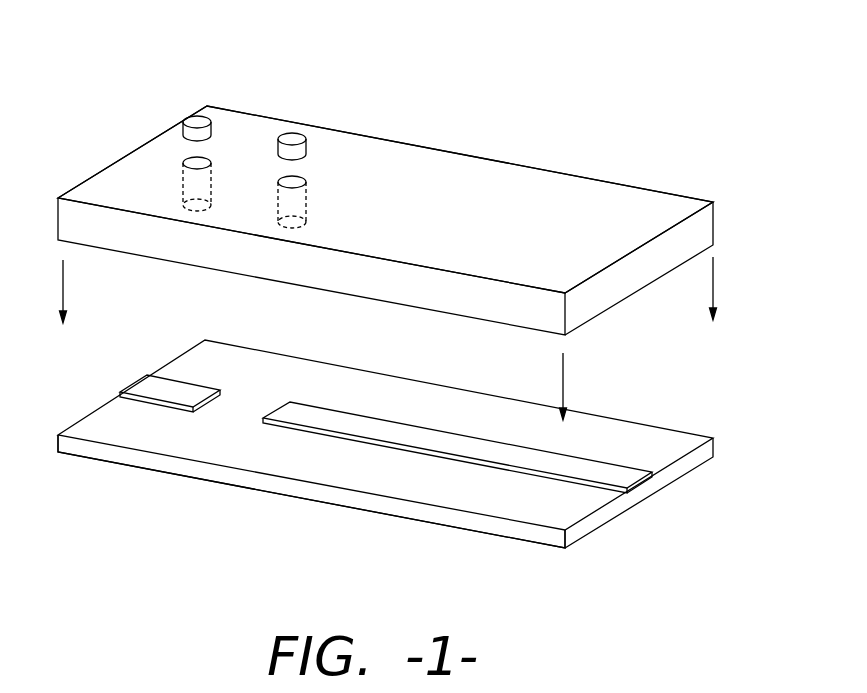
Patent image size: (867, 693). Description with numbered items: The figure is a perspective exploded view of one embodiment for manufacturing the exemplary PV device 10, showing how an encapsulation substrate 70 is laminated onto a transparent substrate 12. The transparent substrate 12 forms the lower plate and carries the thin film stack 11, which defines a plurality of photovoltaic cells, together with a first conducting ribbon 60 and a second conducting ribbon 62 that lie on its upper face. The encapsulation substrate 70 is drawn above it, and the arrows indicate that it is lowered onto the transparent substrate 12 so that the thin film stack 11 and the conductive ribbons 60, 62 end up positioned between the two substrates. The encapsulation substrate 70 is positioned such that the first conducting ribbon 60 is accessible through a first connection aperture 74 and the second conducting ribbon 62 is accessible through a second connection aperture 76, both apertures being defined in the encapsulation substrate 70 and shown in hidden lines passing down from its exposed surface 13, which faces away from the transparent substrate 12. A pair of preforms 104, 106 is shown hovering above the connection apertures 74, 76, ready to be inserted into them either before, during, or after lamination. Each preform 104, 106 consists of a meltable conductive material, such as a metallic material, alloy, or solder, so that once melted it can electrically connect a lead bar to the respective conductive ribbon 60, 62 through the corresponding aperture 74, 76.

The PV device 10 is at (538, 48).
The thin film stack 11 is at (260, 452).
The transparent substrate 12 is at (367, 498).
The exposed surface 13 is at (503, 180).
The first conducting ribbon 60 is at (605, 472).
The second conducting ribbon 62 is at (139, 380).
The encapsulation substrate 70 is at (615, 202).
The first connection aperture 74 is at (315, 207).
The second connection aperture 76 is at (184, 150).
The preform 104 is at (290, 134).
The preform 106 is at (195, 117).